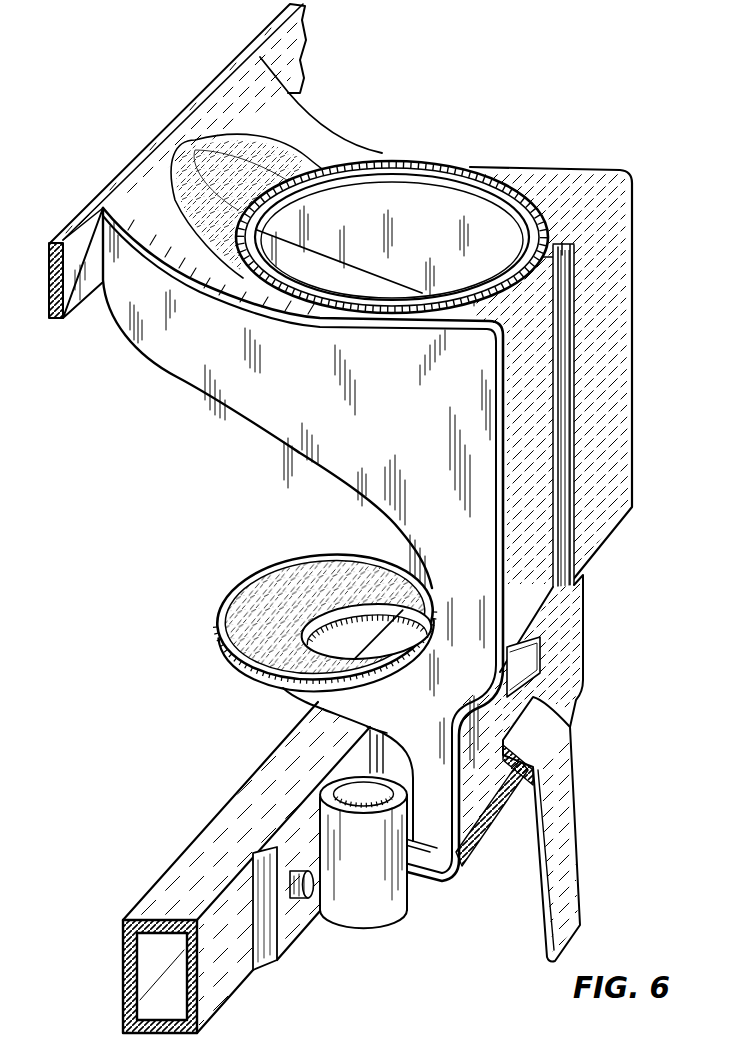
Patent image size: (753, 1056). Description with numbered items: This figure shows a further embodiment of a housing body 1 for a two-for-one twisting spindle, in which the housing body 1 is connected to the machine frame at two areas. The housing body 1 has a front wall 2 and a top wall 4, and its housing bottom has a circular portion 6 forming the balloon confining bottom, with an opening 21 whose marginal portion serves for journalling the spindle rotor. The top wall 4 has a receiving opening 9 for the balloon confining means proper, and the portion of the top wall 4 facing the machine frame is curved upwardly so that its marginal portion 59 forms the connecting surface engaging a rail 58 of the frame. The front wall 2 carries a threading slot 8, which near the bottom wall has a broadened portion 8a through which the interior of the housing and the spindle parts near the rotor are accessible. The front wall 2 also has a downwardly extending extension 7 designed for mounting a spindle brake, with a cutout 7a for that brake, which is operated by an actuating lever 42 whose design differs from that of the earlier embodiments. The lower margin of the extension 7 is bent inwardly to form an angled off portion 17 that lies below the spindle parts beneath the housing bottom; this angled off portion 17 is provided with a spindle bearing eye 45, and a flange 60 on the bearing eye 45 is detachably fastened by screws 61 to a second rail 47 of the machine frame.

The housing body 1 is at (452, 141).
The front wall 2 is at (617, 317).
The top wall 4 is at (323, 140).
The circular portion 6 is at (287, 597).
The extension 7 is at (567, 663).
The cutout 7a is at (517, 793).
The threading slot 8 is at (560, 430).
The broadened portion 8a is at (523, 657).
The receiving opening 9 is at (373, 200).
The angled off portion 17 is at (423, 847).
The opening 21 is at (357, 633).
The actuating lever 42 is at (560, 810).
The spindle bearing eye 45 is at (363, 893).
The rail 47 is at (227, 833).
The rail 58 is at (72, 300).
The marginal portion 59 is at (237, 100).
The flange 60 is at (283, 925).
The screws 61 is at (318, 905).